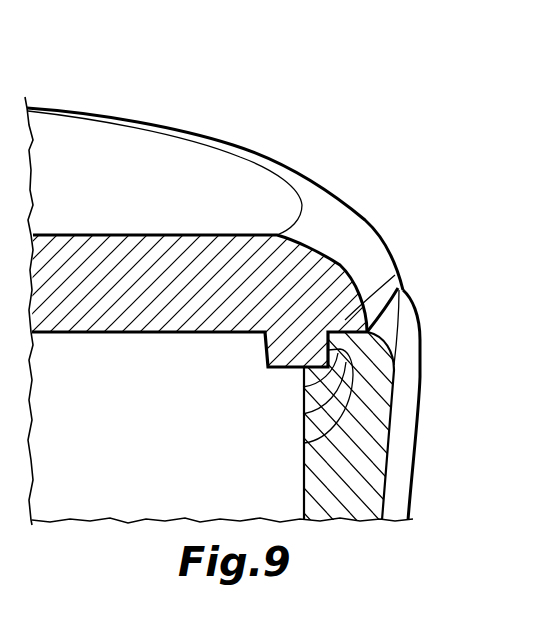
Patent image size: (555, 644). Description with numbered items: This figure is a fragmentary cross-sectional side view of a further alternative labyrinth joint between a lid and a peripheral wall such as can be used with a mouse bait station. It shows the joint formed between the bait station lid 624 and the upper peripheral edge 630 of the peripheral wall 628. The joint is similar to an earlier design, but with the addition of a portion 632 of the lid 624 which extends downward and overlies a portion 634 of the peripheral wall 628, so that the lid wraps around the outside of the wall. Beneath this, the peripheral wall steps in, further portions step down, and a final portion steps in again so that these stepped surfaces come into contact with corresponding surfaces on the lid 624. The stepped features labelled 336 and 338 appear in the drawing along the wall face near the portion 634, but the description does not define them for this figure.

The bait station lid 624 is at (162, 137).
The upper peripheral edge of the peripheral wall 630 is at (353, 278).
The portion of the lid 632 is at (399, 288).
The peripheral wall 628 is at (304, 489).
The portion of the peripheral wall 634 is at (304, 443).
The groove 336 is at (303, 414).
The groove 338 is at (303, 387).